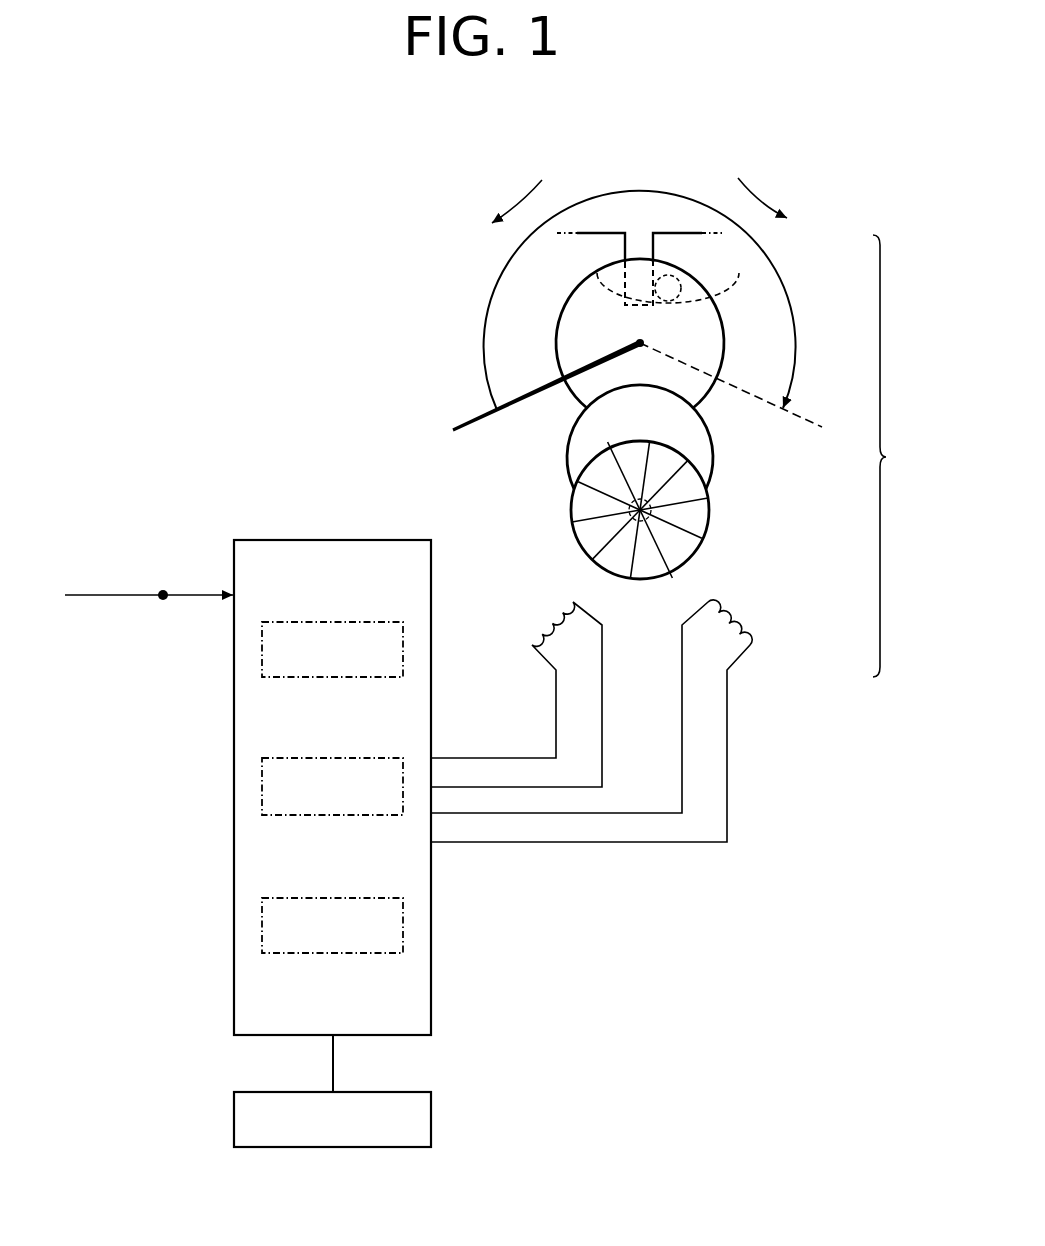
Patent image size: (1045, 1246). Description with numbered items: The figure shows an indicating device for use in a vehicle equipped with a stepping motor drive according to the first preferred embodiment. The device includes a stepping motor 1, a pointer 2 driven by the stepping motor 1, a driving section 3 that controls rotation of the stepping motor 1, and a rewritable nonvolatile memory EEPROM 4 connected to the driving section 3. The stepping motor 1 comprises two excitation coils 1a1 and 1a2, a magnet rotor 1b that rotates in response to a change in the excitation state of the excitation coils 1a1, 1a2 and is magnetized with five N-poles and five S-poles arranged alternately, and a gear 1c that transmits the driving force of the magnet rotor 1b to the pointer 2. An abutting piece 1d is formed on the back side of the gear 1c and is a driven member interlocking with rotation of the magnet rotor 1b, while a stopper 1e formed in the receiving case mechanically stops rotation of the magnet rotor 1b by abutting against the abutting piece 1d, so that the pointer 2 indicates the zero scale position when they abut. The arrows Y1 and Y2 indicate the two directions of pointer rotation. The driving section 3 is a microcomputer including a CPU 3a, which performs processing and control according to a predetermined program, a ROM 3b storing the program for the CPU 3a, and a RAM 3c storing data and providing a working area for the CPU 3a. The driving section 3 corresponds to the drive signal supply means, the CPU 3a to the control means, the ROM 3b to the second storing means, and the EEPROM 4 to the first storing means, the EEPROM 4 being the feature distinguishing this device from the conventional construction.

The stepping motor 1 is at (894, 456).
The excitation coil 1a1 is at (733, 613).
The excitation coil 1a2 is at (567, 641).
The magnet rotor 1b is at (710, 502).
The gear 1c is at (713, 398).
The abutting piece 1d is at (709, 276).
The stopper 1e is at (597, 272).
The pointer 2 is at (517, 400).
The driving section 3 is at (375, 540).
The central processing unit (CPU) 3a is at (317, 758).
The read only memory (ROM) 3b is at (317, 622).
The random access memory (RAM) 3c is at (318, 898).
The EEPROM 4 is at (375, 1090).
The rotation direction Y1 is at (518, 197).
The rotation direction Y2 is at (760, 197).